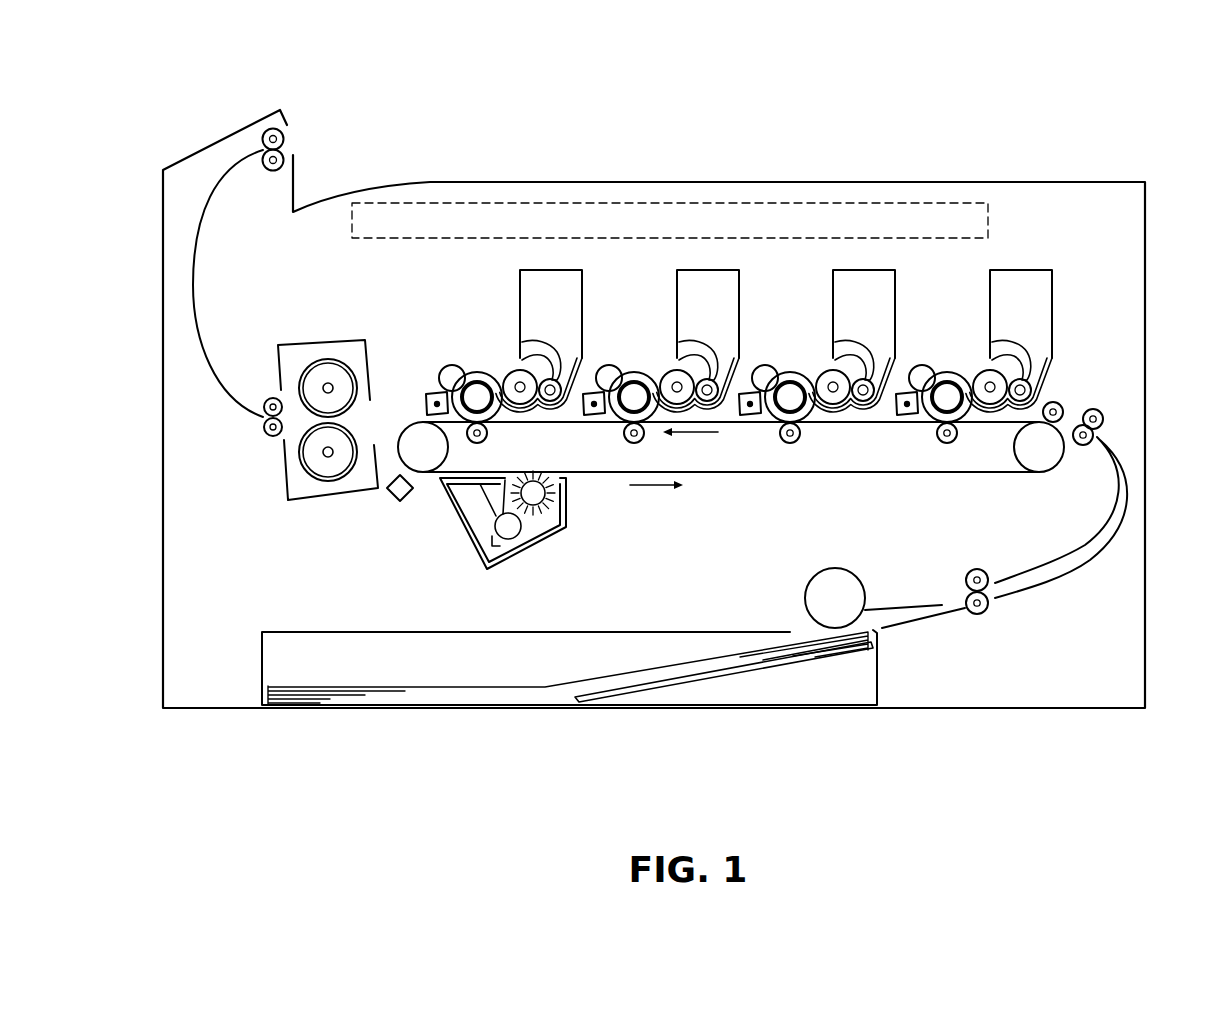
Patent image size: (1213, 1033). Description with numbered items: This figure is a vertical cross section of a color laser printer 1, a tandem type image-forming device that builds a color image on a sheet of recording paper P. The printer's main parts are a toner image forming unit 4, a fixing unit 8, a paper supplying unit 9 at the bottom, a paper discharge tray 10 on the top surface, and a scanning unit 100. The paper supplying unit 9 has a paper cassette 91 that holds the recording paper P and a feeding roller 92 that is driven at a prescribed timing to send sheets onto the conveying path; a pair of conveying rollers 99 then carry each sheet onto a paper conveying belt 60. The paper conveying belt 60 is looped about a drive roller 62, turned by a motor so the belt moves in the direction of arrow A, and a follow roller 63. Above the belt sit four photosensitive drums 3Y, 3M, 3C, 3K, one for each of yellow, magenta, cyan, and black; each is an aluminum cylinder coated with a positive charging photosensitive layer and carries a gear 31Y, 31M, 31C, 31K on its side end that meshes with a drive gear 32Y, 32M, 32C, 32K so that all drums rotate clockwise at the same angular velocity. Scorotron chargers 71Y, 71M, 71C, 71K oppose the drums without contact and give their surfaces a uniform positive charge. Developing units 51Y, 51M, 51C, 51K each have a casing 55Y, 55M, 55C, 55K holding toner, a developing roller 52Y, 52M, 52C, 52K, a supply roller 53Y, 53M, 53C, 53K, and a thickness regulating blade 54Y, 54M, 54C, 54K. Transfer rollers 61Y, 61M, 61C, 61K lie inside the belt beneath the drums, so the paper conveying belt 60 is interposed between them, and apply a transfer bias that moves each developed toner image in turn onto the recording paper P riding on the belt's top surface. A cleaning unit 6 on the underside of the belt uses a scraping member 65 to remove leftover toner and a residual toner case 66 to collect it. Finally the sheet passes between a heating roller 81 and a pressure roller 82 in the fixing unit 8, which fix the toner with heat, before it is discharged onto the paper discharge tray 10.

The color laser printer 1 is at (717, 82).
The paper discharge tray 10 is at (340, 165).
The scanning unit 100 is at (988, 224).
The toner image forming unit 4 is at (743, 395).
The fixing unit 8 is at (282, 358).
The heating roller 81 is at (315, 384).
The pressure roller 82 is at (320, 445).
The paper conveying belt 60 is at (870, 474).
The drive roller 62 is at (426, 462).
The follow roller 63 is at (1040, 458).
The developing unit 51K is at (484, 403).
The developing unit 51C is at (649, 394).
The developing unit 51M is at (806, 383).
The developing unit 51Y is at (998, 352).
The casing 55K is at (525, 272).
The casing 55C is at (684, 272).
The casing 55M is at (840, 272).
The casing 55Y is at (997, 272).
The supply roller 53K is at (557, 412).
The supply roller 53C is at (711, 412).
The supply roller 53M is at (868, 412).
The supply roller 53Y is at (1049, 392).
The thickness regulating blade 54K is at (521, 360).
The thickness regulating blade 54C is at (678, 360).
The thickness regulating blade 54M is at (834, 360).
The thickness regulating blade 54Y is at (991, 360).
The developing roller 52K is at (519, 370).
The developing roller 52C is at (676, 370).
The developing roller 52M is at (832, 370).
The developing roller 52Y is at (989, 370).
The photosensitive drum 3K is at (478, 367).
The photosensitive drum 3C is at (637, 368).
The photosensitive drum 3M is at (791, 368).
The photosensitive drum 3Y is at (947, 368).
The charger 71K is at (428, 393).
The charger 71C is at (590, 390).
The charger 71M is at (746, 390).
The charger 71Y is at (903, 390).
The drive gear 32K is at (437, 392).
The drive gear 32C is at (596, 414).
The drive gear 32M is at (753, 414).
The drive gear 32Y is at (910, 414).
The transfer roller 61K is at (472, 442).
The transfer roller 61C is at (633, 444).
The transfer roller 61M is at (788, 444).
The transfer roller 61Y is at (946, 444).
The gear 31K is at (498, 424).
The gear 31C is at (644, 441).
The gear 31M is at (799, 441).
The gear 31Y is at (956, 441).
The cleaning unit 6 is at (475, 557).
The scraping member 65 is at (531, 552).
The residual toner case 66 is at (488, 528).
The paper supplying unit 9 is at (693, 720).
The recording paper P is at (480, 688).
The paper cassette 91 is at (632, 648).
The feeding roller 92 is at (805, 599).
The conveying rollers 99 is at (1098, 406).